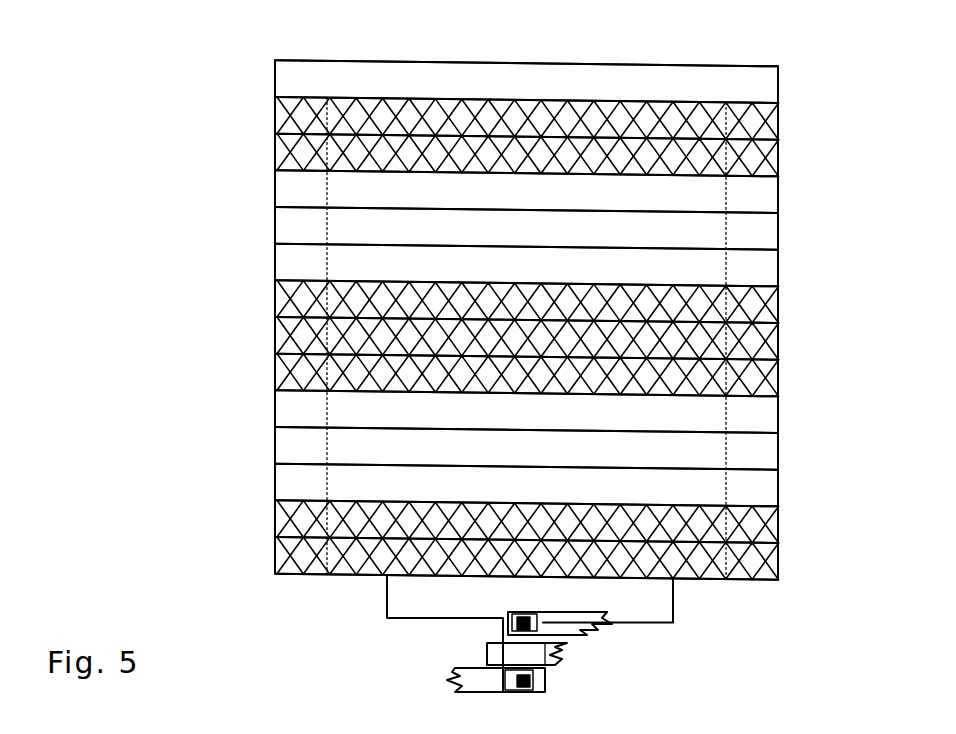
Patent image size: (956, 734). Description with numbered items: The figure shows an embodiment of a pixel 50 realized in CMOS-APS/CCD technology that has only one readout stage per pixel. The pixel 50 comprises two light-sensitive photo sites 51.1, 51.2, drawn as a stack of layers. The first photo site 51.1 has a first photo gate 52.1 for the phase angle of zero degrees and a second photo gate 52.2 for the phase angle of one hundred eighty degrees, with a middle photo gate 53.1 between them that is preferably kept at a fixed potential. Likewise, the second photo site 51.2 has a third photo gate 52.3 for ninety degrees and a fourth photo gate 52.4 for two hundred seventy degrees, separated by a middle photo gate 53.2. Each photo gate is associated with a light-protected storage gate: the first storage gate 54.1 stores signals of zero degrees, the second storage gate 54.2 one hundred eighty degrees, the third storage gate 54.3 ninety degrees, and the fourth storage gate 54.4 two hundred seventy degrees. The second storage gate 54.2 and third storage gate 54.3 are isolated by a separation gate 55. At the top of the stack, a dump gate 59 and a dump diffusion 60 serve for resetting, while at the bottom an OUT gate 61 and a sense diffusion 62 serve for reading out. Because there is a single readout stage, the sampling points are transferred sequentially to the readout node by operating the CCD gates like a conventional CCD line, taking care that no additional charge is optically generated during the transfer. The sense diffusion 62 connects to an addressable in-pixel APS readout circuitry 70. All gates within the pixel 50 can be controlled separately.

The pixel 50 is at (356, 48).
The dump diffusion 60 is at (288, 88).
The dump gate 59 is at (286, 117).
The first storage gate 54.1 is at (286, 153).
The first photo gate 52.1 is at (286, 191).
The middle photo gate 53.1 is at (286, 230).
The second photo gate 52.2 is at (286, 265).
The first photo site 51.1 is at (463, 228).
The second storage gate 54.2 is at (286, 303).
The separation gate 55 is at (286, 343).
The third storage gate 54.3 is at (286, 378).
The third photo gate 52.3 is at (286, 410).
The middle photo gate 53.2 is at (286, 448).
The fourth photo gate 52.4 is at (286, 482).
The second photo site 51.2 is at (463, 448).
The fourth storage gate 54.4 is at (286, 522).
The OUT gate 61 is at (286, 558).
The sense diffusion 62 is at (387, 608).
The addressable in-pixel APS readout circuitry 70 is at (577, 655).